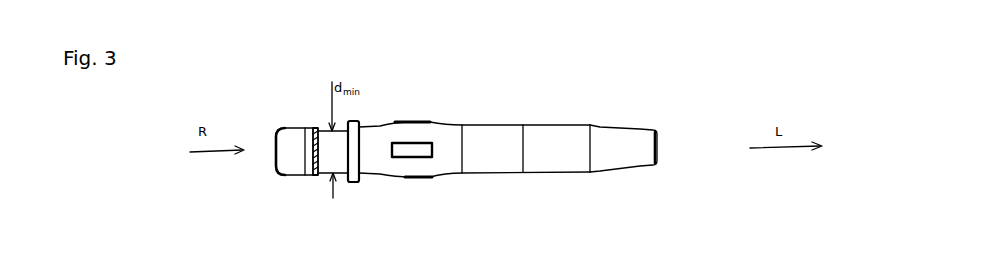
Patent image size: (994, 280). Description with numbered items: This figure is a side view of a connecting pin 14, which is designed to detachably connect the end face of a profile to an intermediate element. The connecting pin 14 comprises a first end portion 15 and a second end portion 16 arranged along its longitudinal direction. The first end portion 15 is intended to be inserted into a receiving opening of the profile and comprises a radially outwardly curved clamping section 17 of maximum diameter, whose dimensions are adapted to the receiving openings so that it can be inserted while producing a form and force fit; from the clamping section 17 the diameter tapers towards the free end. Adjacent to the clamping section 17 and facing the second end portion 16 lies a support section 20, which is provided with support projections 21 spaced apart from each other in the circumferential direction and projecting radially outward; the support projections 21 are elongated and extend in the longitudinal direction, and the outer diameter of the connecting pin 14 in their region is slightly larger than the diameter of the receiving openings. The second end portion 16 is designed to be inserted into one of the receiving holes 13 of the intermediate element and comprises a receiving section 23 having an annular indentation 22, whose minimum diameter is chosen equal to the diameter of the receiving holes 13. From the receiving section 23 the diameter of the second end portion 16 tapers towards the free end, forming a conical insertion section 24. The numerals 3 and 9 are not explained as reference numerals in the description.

The tool 3 is at (348, 8).
The tool holder 9 is at (522, 9).
The receiving hole 13 is at (640, 168).
The connecting pin 14 is at (652, 103).
The first end portion 15 is at (655, 199).
The second end portion 16 is at (362, 203).
The clamping section 17 is at (555, 125).
The support section 20 is at (423, 176).
The support projections 21 is at (411, 121).
The annular indentation 22 is at (292, 111).
The receiving section 23 is at (325, 135).
The conical insertion section 24 is at (292, 160).